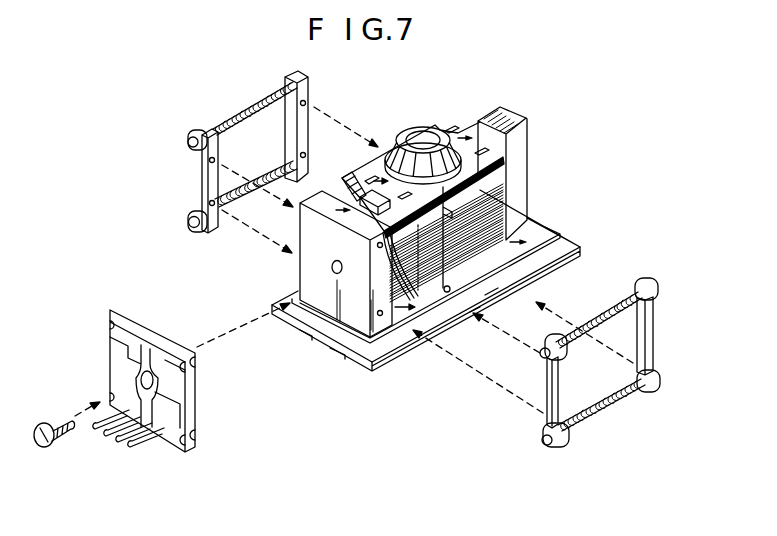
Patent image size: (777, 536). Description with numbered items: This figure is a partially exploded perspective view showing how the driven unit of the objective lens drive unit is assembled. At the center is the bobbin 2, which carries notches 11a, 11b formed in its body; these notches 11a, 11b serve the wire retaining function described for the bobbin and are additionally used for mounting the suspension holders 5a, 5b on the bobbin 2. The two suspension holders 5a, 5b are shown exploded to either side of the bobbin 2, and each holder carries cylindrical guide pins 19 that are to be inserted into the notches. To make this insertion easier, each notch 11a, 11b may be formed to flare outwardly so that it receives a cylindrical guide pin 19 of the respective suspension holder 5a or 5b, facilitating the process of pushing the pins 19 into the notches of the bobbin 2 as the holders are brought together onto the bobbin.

The bobbin 2 is at (443, 124).
The suspension holder 5a is at (652, 318).
The suspension holder 5b is at (286, 83).
The cylindrical guide pin 19 is at (306, 103).
The notch 11a is at (507, 177).
The notch 11b is at (509, 245).